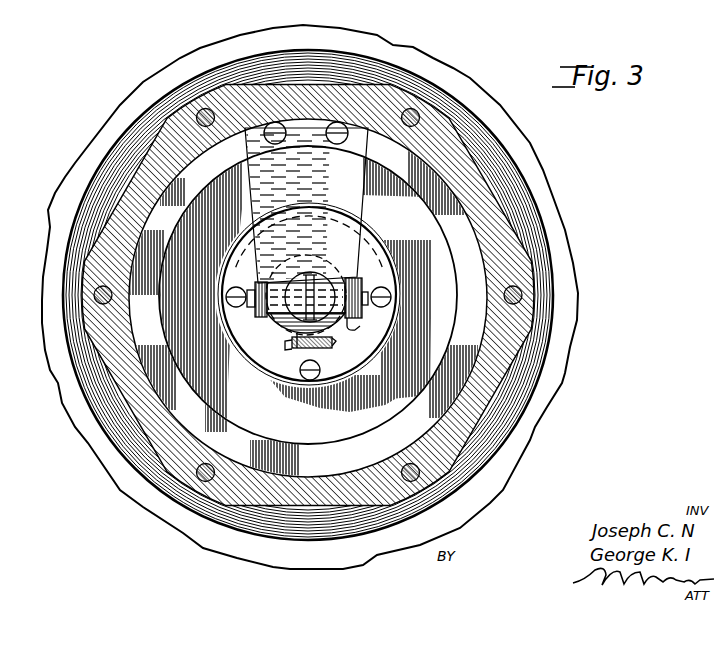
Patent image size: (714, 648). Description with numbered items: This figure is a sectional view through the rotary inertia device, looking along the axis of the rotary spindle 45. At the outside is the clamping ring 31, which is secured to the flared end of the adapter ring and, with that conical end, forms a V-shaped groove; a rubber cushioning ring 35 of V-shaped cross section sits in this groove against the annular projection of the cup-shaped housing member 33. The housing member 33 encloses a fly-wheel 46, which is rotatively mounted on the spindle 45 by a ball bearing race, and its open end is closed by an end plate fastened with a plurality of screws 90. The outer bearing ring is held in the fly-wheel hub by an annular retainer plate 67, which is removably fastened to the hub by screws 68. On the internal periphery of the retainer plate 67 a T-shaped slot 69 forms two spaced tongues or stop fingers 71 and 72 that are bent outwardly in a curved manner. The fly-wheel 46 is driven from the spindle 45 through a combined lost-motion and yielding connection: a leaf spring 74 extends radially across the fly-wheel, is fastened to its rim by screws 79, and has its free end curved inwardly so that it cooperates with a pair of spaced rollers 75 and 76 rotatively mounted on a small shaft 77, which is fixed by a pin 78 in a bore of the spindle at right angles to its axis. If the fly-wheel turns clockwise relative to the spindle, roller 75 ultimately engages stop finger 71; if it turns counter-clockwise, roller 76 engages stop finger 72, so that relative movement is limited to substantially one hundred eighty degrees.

The clamping ring 31 is at (543, 200).
The cup-shaped housing member 33 is at (497, 353).
The cushioning ring 35 is at (100, 191).
The rotary spindle 45 is at (294, 280).
The fly-wheel 46 is at (318, 455).
The annular retainer plate 67 is at (368, 249).
The screws 68 is at (236, 307).
The T-shaped slot 69 is at (335, 344).
The stop finger 71 is at (297, 348).
The stop finger 72 is at (320, 370).
The leaf spring 74 is at (352, 212).
The roller 75 is at (256, 284).
The roller 76 is at (358, 284).
The small shaft 77 is at (350, 320).
The pin 78 is at (313, 278).
The screws 79 is at (326, 129).
The screws 90 is at (199, 111).